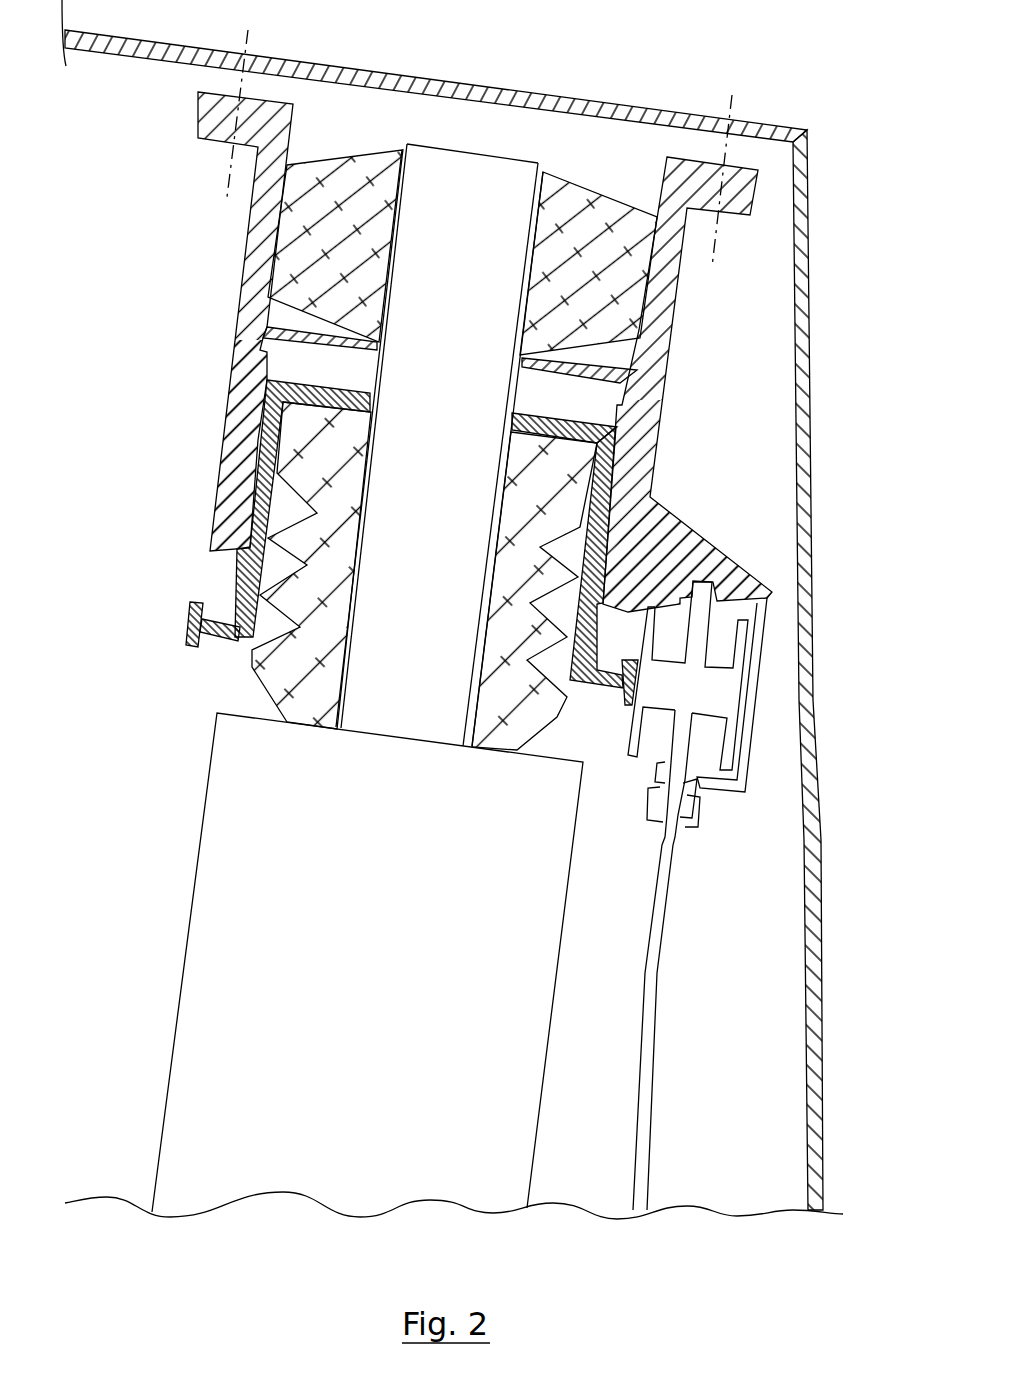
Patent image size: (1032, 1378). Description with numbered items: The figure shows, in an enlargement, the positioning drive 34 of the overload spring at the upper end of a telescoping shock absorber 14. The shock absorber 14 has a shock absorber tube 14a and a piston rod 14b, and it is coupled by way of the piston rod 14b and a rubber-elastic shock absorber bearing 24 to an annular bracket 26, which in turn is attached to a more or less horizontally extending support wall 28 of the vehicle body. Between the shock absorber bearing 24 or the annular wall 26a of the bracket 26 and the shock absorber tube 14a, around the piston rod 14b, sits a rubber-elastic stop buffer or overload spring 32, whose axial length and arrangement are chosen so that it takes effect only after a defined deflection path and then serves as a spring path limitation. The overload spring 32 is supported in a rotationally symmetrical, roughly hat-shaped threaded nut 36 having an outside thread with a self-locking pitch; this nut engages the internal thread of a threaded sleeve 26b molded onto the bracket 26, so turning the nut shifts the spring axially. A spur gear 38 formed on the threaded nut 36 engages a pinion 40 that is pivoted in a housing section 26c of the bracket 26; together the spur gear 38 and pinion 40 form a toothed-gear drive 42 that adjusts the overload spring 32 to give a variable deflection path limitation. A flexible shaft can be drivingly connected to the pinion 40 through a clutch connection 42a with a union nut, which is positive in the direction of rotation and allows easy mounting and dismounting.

The telescoping shock absorber 14 is at (331, 678).
The shock absorber tube 14a is at (395, 1001).
The piston rod 14b is at (440, 641).
The shock absorber bearing 24 is at (355, 246).
The annular bracket 26 is at (224, 341).
The annular wall 26a is at (596, 386).
The threaded sleeve 26b is at (219, 468).
The housing section 26c is at (742, 570).
The support wall 28 is at (557, 92).
The overload spring 32 is at (268, 670).
The positioning drive 34 is at (675, 562).
The threaded nut 36 is at (235, 572).
The spur gear 38 is at (193, 622).
The pinion 40 is at (722, 690).
The toothed-gear drive 42 is at (600, 714).
The clutch connection 42a is at (691, 834).